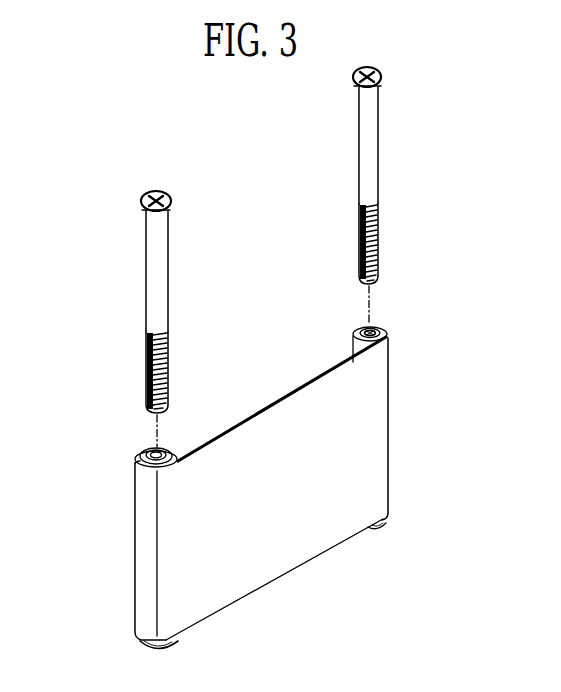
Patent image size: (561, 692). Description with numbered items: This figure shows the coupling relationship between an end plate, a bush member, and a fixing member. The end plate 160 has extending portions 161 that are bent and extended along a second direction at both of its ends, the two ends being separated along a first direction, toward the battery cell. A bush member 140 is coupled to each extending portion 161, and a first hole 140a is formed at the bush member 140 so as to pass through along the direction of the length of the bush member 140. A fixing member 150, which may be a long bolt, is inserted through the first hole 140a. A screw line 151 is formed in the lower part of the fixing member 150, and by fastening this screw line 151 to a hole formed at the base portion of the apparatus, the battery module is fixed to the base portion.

The bush member 140 is at (352, 340).
The first hole 140a is at (384, 326).
The fixing member 150 is at (163, 236).
The screw line 151 is at (166, 345).
The end plate 160 is at (266, 482).
The extending portion 161 is at (145, 528).